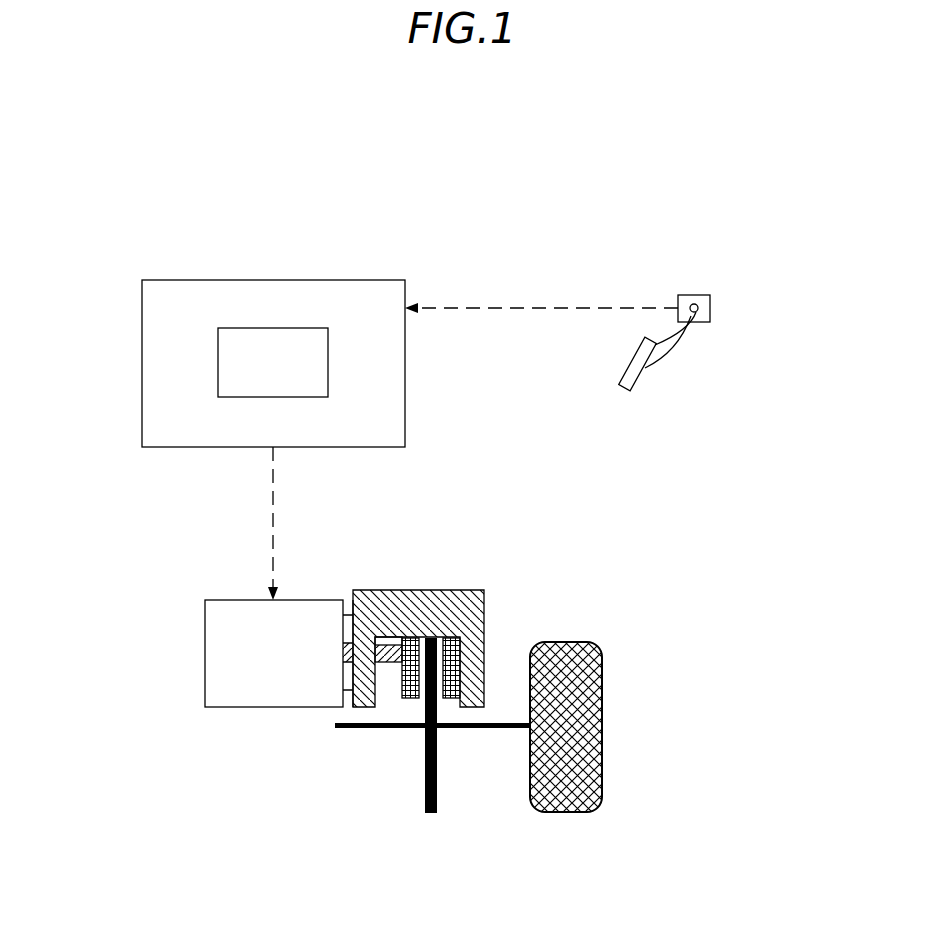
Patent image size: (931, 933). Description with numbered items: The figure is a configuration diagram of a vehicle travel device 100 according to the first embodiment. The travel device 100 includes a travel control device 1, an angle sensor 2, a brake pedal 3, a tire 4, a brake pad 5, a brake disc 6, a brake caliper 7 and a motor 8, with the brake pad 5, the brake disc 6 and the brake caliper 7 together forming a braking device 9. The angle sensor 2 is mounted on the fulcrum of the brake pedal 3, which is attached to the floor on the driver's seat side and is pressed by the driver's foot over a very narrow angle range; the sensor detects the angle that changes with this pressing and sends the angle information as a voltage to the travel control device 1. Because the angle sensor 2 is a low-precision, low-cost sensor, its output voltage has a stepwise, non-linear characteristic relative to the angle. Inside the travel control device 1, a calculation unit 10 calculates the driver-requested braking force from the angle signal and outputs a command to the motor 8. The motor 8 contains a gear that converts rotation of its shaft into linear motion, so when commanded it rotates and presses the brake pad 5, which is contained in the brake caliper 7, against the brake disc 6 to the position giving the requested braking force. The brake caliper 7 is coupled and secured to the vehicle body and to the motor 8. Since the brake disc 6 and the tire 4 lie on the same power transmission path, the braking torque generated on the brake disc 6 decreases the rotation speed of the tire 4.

The travel control device 1 is at (142, 335).
The calculation unit 10 is at (272, 328).
The angle sensor 2 is at (710, 299).
The brake pedal 3 is at (620, 374).
The tire 4 is at (578, 642).
The brake pad 5 is at (447, 698).
The brake disc 6 is at (425, 760).
The brake caliper 7 is at (353, 697).
The motor 8 is at (205, 648).
The braking device 9 is at (488, 835).
The travel device 100 is at (557, 930).